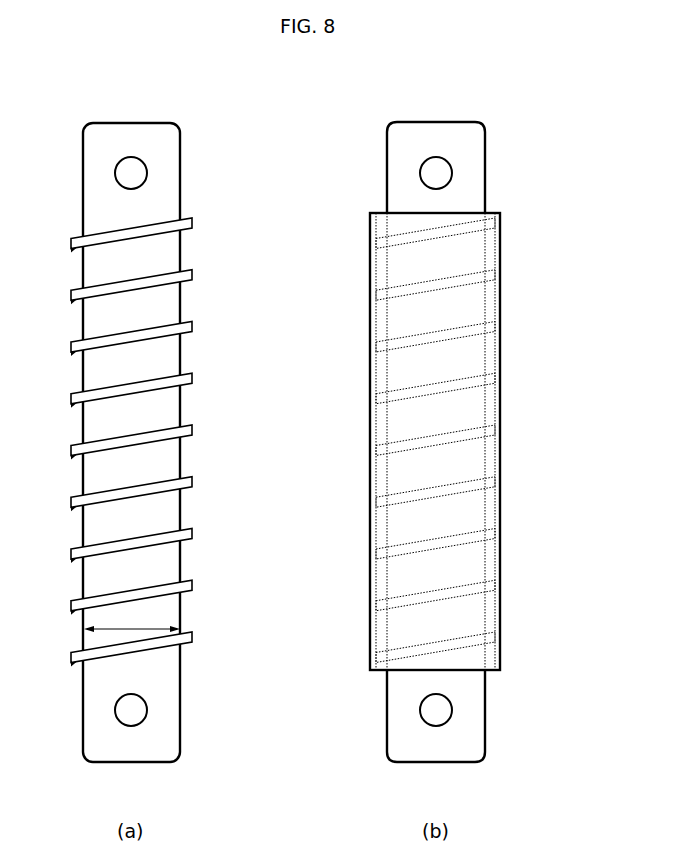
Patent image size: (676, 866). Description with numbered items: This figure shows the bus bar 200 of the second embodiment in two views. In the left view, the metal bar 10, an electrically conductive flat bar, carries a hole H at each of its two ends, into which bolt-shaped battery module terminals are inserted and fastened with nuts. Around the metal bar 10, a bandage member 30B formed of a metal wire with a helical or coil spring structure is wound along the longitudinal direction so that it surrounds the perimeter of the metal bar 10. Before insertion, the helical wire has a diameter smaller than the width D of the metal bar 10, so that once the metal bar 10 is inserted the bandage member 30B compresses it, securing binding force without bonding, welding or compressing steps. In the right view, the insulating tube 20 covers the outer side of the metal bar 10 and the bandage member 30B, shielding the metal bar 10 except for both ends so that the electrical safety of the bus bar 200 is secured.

The bus bar 200 is at (508, 122).
The metal bar 10 is at (184, 243).
The insulating tube 20 is at (500, 297).
The bandage member 30B is at (187, 325).
The hole H is at (138, 173).
The width of the metal bar D is at (132, 619).